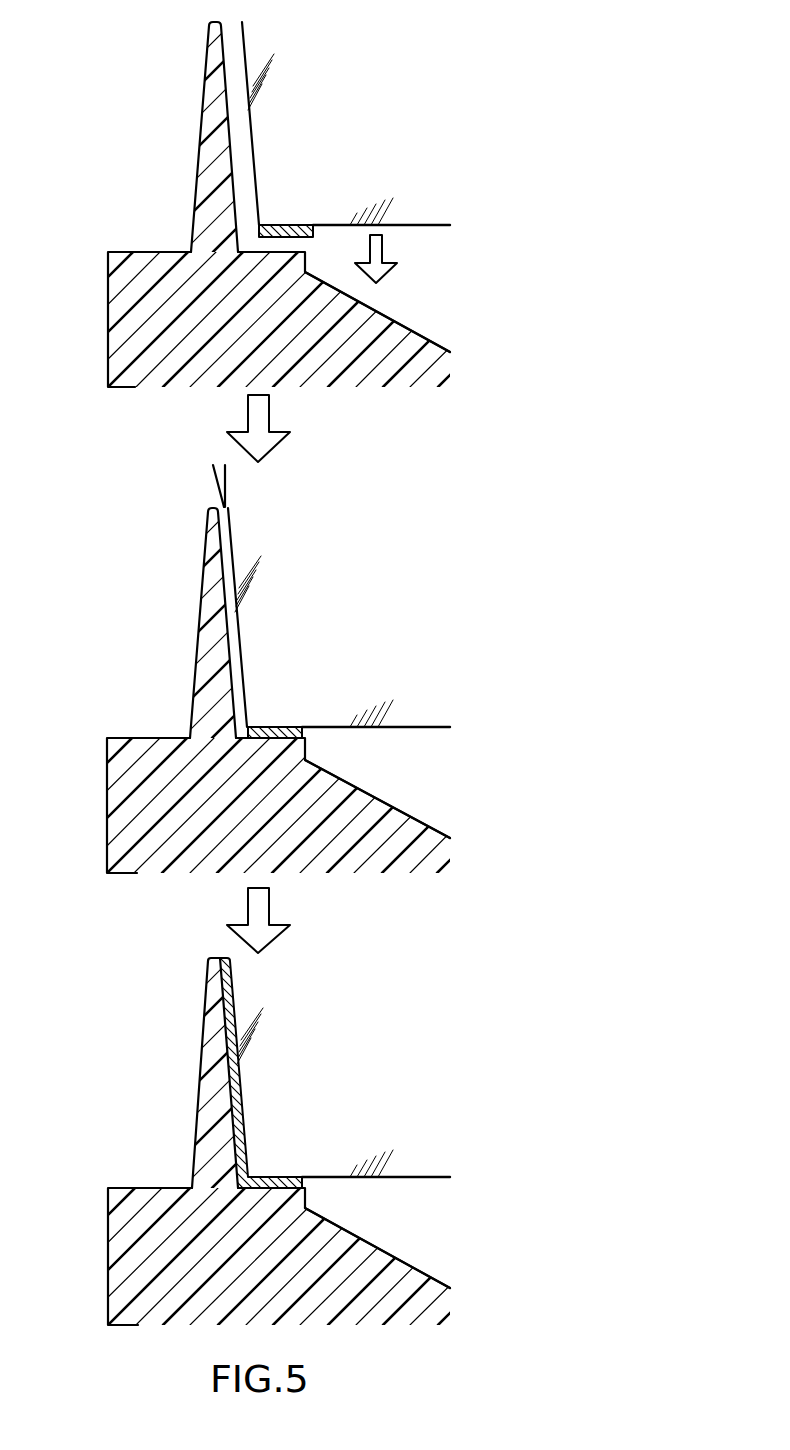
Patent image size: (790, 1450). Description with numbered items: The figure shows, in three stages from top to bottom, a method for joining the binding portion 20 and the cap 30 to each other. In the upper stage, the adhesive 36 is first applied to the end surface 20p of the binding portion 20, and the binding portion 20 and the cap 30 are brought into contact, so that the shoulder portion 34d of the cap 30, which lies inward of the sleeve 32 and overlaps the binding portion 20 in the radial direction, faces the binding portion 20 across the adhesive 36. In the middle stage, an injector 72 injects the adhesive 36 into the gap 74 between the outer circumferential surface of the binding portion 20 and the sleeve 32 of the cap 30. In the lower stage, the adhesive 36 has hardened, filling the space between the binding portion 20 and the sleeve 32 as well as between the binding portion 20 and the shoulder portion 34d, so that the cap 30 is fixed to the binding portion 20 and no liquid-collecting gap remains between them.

The binding portion 20 is at (362, 138).
The end surface of the binding portion 20p is at (400, 226).
The cap 30 is at (145, 334).
The sleeve 32 is at (213, 138).
The shoulder portion 34d is at (310, 272).
The adhesive 36 is at (259, 231).
The injector 72 is at (217, 479).
The gap 74 is at (238, 684).